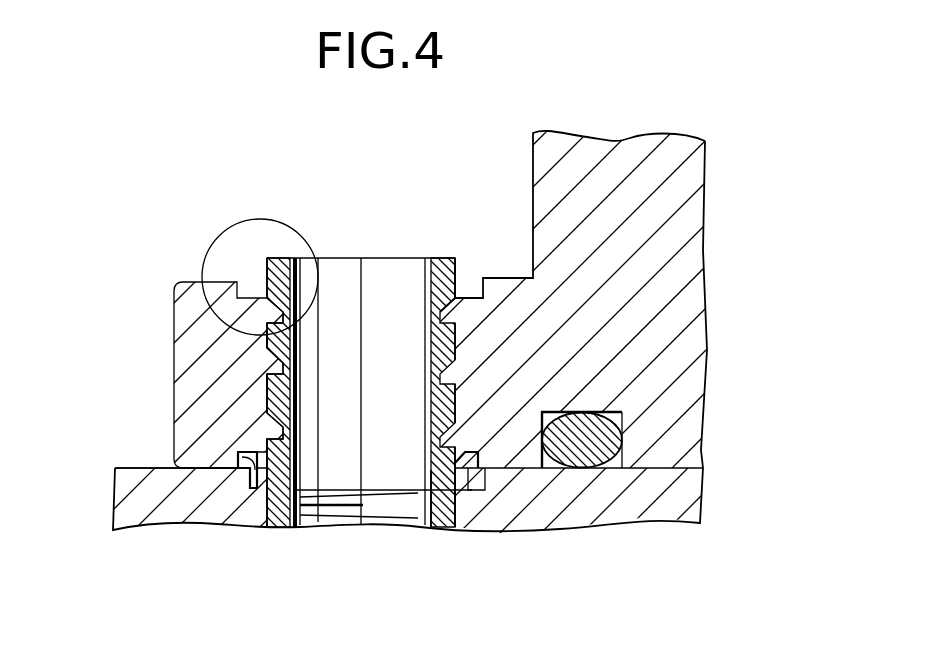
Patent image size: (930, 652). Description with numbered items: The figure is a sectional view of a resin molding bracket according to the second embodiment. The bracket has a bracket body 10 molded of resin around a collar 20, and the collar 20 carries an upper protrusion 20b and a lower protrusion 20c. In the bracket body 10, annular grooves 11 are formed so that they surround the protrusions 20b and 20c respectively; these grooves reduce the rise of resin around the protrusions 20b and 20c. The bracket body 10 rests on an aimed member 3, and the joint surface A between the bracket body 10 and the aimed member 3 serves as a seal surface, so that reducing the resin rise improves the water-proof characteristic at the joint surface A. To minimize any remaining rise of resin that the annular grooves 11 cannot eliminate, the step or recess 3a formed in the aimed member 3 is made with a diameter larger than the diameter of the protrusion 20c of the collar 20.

The aimed member 3 is at (585, 505).
The step (recess) 3a is at (420, 480).
The bracket body 10 is at (175, 388).
The annular groove 11 is at (248, 283).
The collar 20 is at (306, 270).
The protrusion 20b is at (457, 274).
The protrusion 20c is at (446, 484).
The joint surface A is at (147, 468).